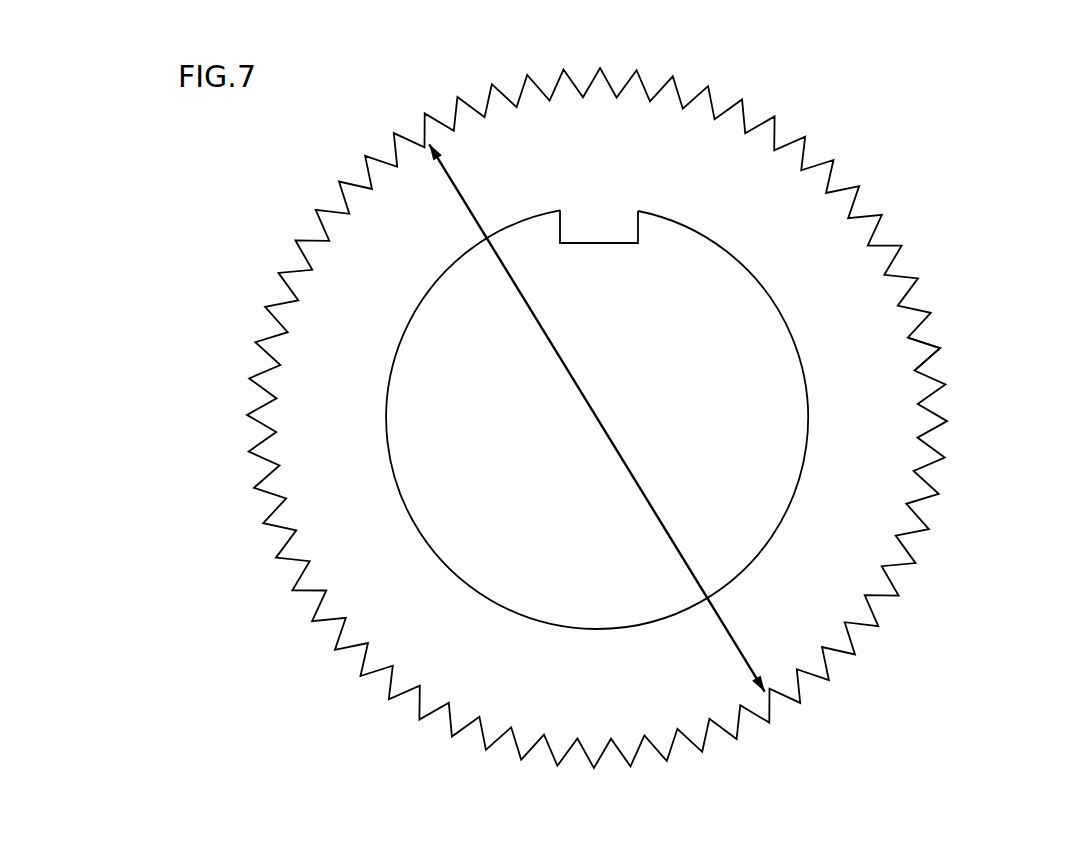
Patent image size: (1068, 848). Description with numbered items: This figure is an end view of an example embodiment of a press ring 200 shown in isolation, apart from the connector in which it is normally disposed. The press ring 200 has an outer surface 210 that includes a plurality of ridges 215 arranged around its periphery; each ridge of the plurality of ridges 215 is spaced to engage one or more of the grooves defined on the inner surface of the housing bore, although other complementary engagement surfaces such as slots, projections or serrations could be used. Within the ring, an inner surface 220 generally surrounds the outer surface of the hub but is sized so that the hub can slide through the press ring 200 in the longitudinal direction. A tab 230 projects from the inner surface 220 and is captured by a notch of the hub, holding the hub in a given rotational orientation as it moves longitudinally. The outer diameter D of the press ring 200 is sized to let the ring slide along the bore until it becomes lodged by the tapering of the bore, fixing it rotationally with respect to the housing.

The press ring 200 is at (648, 405).
The outer surface 210 is at (885, 232).
The plurality of ridges 215 is at (940, 348).
The inner surface 220 is at (627, 419).
The tab 230 is at (608, 220).
The outer diameter D is at (598, 417).